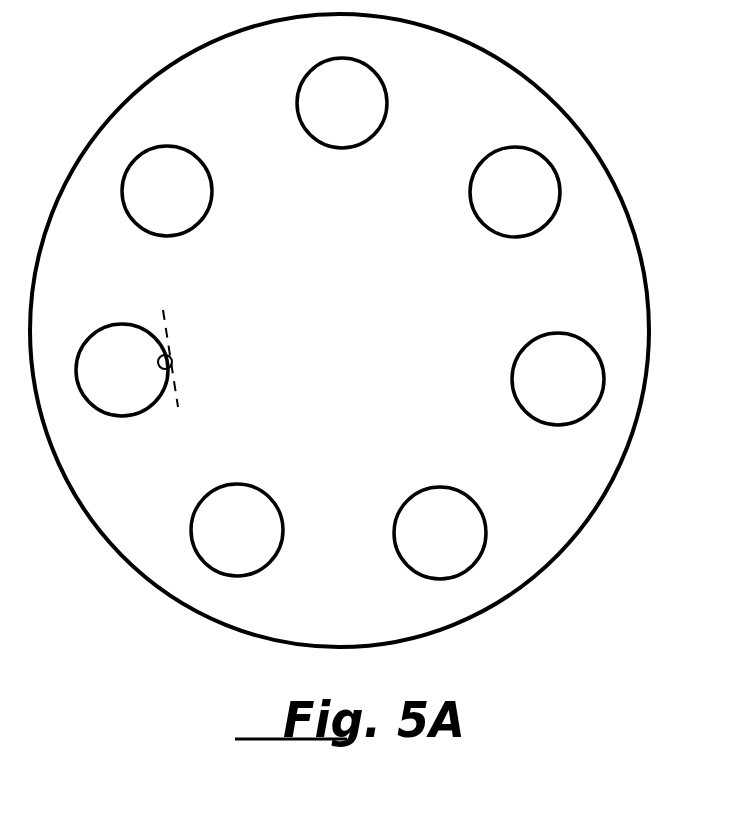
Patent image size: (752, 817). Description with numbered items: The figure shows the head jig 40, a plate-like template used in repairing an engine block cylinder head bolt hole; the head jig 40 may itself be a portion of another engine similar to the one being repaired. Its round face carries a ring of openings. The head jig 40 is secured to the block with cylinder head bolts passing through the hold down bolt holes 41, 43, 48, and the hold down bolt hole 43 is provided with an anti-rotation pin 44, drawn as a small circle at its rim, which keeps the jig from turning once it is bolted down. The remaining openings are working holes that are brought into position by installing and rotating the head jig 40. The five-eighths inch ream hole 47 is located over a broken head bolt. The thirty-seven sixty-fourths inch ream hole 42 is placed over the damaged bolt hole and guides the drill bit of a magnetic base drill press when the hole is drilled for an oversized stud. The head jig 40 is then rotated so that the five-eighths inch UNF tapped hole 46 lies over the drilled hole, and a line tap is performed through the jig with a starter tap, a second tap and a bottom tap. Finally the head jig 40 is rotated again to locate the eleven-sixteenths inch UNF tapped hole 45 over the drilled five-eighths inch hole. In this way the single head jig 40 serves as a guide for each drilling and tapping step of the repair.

The head jig 40 is at (642, 95).
The hold down bolt hole 41 is at (385, 117).
The 37/64 inch ream hole 42 is at (205, 203).
The hold down bolt hole 43 is at (140, 407).
The anti-rotation pin 44 is at (168, 356).
The eleven-sixteenths inch 16 UNF tapped hole 45 is at (272, 505).
The five eighths inch - 1/8 UNF tapped hole 46 is at (510, 232).
The five-eighths inch ream hole 47 is at (513, 377).
The hold down bolt hole 48 is at (476, 502).